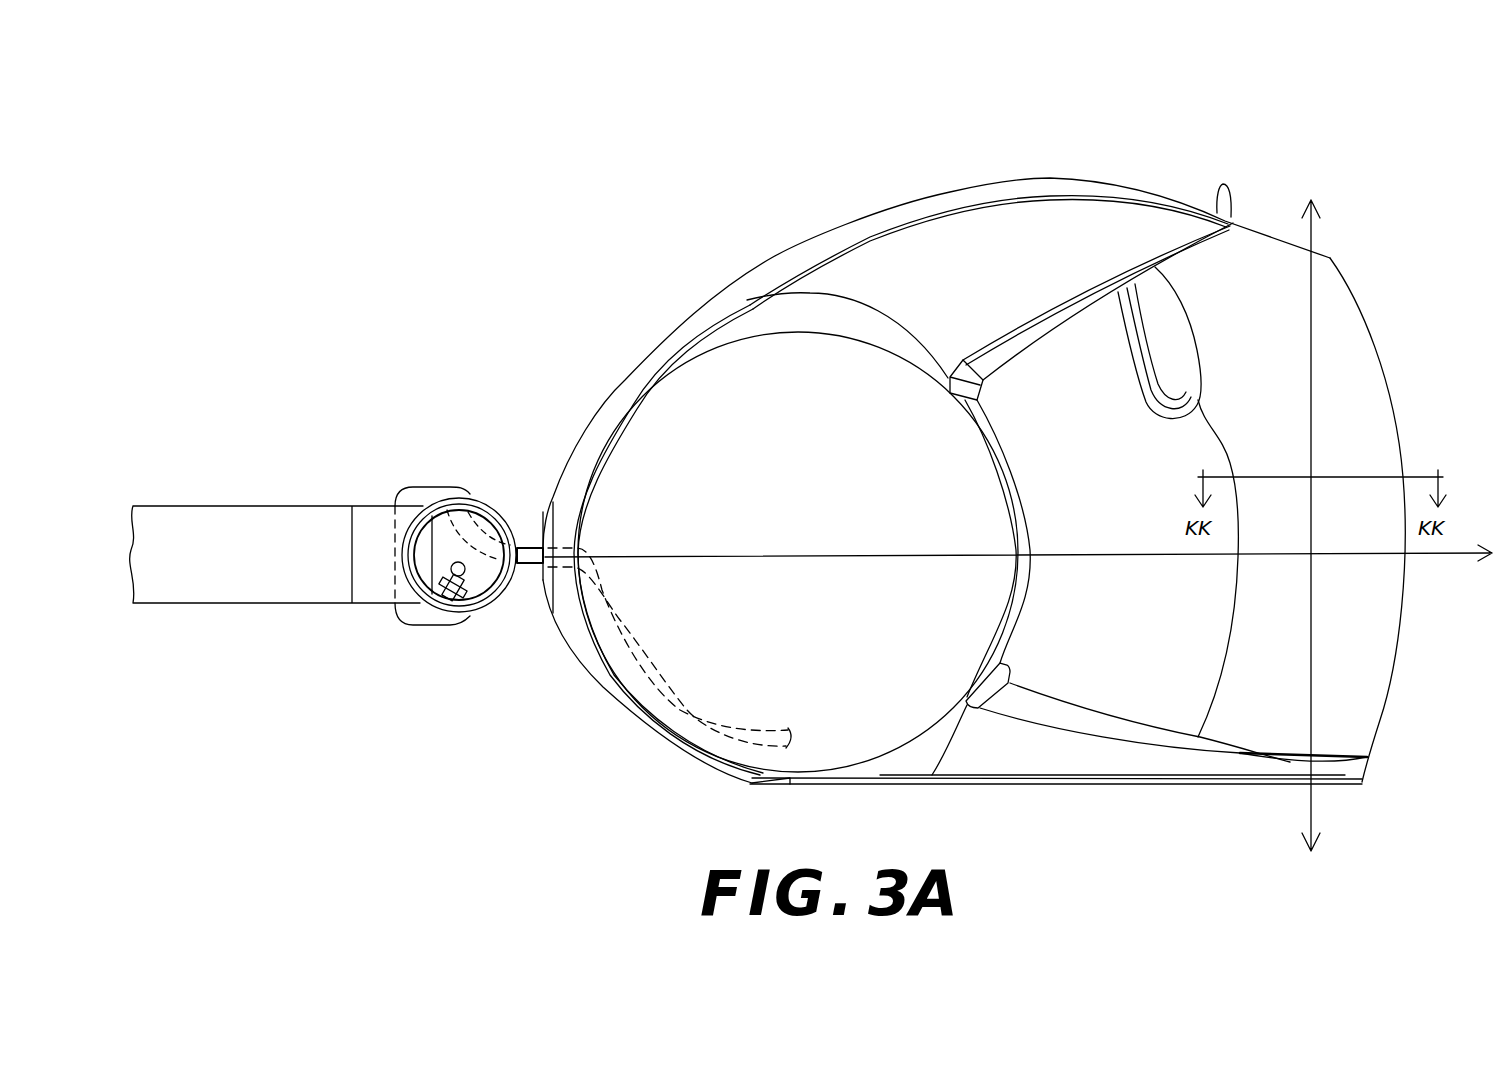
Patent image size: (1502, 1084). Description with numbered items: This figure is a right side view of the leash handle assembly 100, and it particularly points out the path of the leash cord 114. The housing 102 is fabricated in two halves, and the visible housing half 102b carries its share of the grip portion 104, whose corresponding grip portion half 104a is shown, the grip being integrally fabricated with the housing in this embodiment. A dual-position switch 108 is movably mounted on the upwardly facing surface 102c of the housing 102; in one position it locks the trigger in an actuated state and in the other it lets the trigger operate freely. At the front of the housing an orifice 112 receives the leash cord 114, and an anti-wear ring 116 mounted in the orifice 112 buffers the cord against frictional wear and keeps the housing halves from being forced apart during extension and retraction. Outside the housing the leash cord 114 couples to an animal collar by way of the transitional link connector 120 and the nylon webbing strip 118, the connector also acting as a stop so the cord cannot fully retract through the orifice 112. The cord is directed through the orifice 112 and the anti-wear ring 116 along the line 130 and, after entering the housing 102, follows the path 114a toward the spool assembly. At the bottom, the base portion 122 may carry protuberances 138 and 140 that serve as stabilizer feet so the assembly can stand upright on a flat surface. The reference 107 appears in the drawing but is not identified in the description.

The leash handle assembly 100 is at (1397, 195).
The housing 102 is at (664, 429).
The housing half 102b is at (763, 263).
The upwardly facing surface 102c is at (1200, 200).
The grip portion 104 is at (1390, 407).
The grip portion half 104a is at (1362, 637).
The vertical axis 107 is at (1313, 808).
The dual-position switch 108 is at (1230, 192).
The orifice 112 is at (543, 530).
The leash cord 114 is at (530, 560).
The path 114a is at (707, 706).
The anti-wear ring 116 is at (550, 578).
The nylon webbing strip 118 is at (245, 587).
The transitional link connector 120 is at (471, 494).
The base portion 122 is at (1047, 752).
The line 130 is at (862, 548).
The protuberance 138 is at (790, 784).
The protuberance 140 is at (1135, 782).